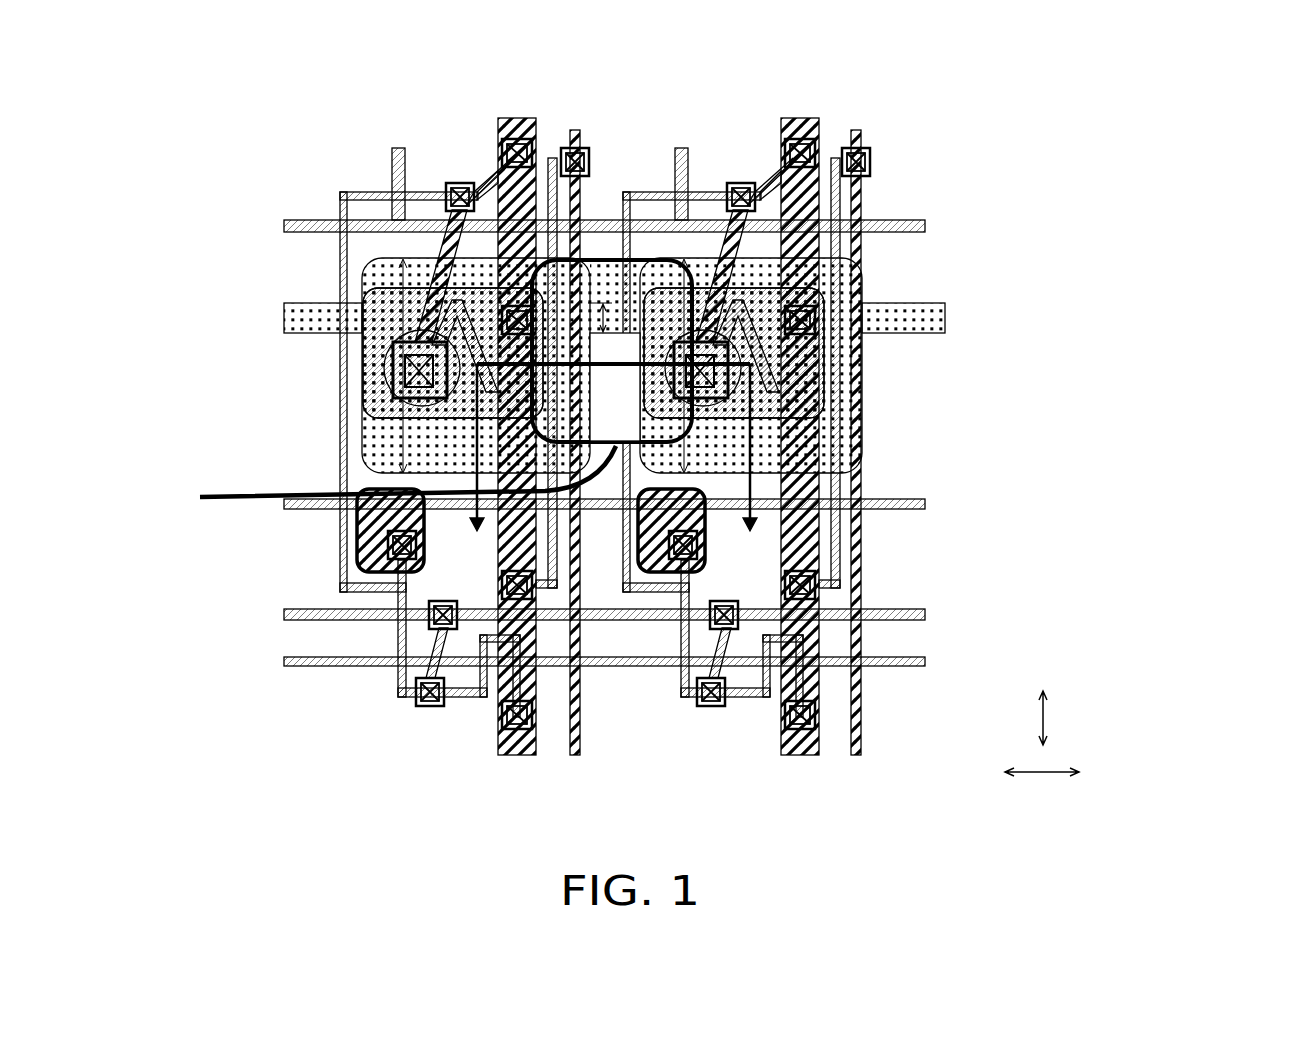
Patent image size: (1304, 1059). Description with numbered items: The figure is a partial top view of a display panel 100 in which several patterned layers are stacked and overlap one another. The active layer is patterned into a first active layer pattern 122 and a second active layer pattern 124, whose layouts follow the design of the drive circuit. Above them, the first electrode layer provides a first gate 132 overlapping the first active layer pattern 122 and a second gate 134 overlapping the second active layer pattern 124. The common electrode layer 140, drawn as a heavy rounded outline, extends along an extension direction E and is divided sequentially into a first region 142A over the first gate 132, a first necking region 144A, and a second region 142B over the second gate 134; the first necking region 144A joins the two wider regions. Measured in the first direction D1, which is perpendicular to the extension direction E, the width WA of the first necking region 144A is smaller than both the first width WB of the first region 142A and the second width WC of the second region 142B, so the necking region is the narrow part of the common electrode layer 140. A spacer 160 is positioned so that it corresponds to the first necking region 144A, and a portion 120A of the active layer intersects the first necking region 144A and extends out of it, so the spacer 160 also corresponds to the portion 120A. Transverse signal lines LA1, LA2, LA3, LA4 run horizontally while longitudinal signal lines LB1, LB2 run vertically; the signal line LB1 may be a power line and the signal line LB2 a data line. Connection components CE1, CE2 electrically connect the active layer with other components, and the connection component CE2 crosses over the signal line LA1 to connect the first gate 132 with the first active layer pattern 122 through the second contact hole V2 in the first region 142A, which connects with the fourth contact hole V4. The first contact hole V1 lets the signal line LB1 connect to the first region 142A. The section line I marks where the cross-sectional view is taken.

The display panel 100 is at (1287, 792).
The portion of the active layer 120A is at (343, 318).
The first active layer pattern 122 is at (342, 468).
The second active layer pattern 124 is at (627, 548).
The first gate 132 is at (378, 259).
The second gate 134 is at (805, 272).
The common electrode layer 140 is at (793, 55).
The first region 142A is at (468, 253).
The second region 142B is at (692, 258).
The first necking region 144A is at (636, 320).
The spacer 160 is at (380, 480).
The connection component CE1 is at (358, 540).
The connection component CE2 is at (447, 193).
The signal line LA1 is at (905, 222).
The signal line LA2 is at (905, 503).
The third horizontal line LA3 is at (905, 612).
The fourth horizontal line LA4 is at (905, 665).
The signal line LB1 is at (517, 122).
The signal line LB2 is at (570, 728).
The first contact hole V1 is at (478, 366).
The second contact hole V2 is at (378, 368).
The fourth contact hole V4 is at (403, 362).
The width of the first necking region WA is at (603, 300).
The first width WB is at (423, 366).
The second width WC is at (703, 366).
The first direction D1 is at (1063, 718).
The extension direction E is at (1054, 771).
The line I- I is at (613, 465).